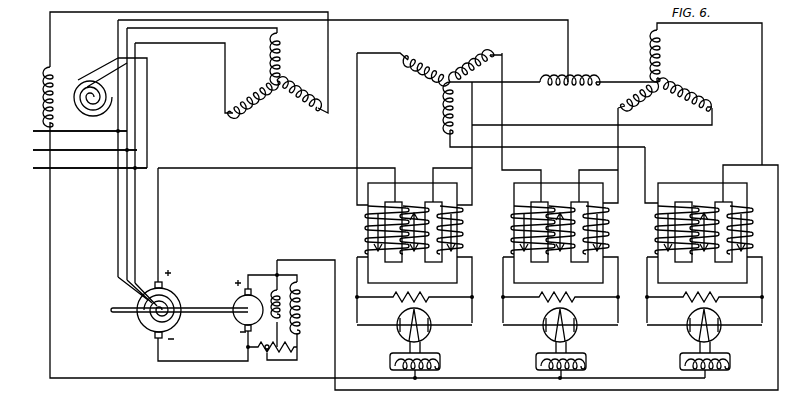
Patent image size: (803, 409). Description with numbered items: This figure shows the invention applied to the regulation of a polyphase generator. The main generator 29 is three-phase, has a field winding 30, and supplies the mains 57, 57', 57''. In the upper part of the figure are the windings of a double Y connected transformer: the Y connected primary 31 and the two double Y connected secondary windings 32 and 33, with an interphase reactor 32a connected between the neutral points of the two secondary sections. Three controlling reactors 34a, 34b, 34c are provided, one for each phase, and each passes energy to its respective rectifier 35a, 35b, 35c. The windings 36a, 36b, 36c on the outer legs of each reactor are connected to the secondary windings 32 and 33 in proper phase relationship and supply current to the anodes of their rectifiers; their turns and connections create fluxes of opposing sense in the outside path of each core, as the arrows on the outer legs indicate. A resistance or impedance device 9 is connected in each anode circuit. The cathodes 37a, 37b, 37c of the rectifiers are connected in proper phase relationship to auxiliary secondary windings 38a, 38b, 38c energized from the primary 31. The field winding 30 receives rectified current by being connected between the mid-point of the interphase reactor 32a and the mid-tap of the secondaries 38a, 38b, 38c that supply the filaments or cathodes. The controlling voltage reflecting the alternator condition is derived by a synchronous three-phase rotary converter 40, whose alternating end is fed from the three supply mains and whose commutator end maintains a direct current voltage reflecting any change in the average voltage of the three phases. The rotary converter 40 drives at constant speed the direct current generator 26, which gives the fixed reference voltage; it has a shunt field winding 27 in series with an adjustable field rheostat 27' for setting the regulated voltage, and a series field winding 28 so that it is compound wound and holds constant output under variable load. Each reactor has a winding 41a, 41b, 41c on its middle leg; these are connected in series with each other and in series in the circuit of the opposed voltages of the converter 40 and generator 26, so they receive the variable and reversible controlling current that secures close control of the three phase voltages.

The field winding 30 is at (56, 82).
The main generator 29 is at (100, 107).
The Y connected primary 31 is at (270, 82).
The secondary winding 32 is at (448, 90).
The interphase reactor 32a is at (568, 90).
The secondary winding 33 is at (667, 72).
The main 57 is at (80, 140).
The main 57' is at (85, 159).
The main 57'' is at (90, 178).
The synchronous three-phase rotary converter 40 is at (180, 296).
The direct current generator 26 is at (240, 319).
The shunt field winding 27 is at (309, 308).
The series field winding 28 is at (287, 288).
The adjustable field rheostat 27' is at (272, 358).
The controlling reactor 34a is at (411, 188).
The controlling reactor 34b is at (557, 188).
The controlling reactor 34c is at (700, 185).
The outer leg windings 36a is at (370, 240).
The outer leg windings 36b is at (516, 246).
The outer leg windings 36c is at (660, 247).
The middle leg winding 41a is at (410, 256).
The middle leg winding 41b is at (556, 256).
The middle leg winding 41c is at (701, 256).
The rectifier 35a is at (431, 315).
The rectifier 35b is at (577, 315).
The rectifier 35c is at (721, 314).
The cathode 37a is at (430, 336).
The cathode 37b is at (576, 334).
The cathode 37c is at (720, 335).
The auxiliary secondary winding 38a is at (440, 365).
The auxiliary secondary winding 38b is at (586, 366).
The auxiliary secondary winding 38c is at (718, 371).
The resistance or impedance device 9 is at (397, 298).